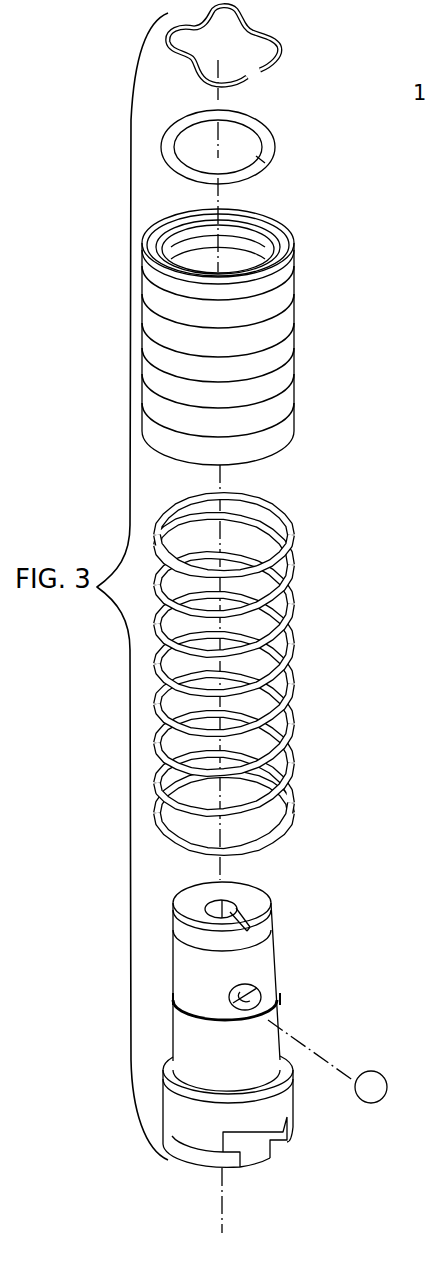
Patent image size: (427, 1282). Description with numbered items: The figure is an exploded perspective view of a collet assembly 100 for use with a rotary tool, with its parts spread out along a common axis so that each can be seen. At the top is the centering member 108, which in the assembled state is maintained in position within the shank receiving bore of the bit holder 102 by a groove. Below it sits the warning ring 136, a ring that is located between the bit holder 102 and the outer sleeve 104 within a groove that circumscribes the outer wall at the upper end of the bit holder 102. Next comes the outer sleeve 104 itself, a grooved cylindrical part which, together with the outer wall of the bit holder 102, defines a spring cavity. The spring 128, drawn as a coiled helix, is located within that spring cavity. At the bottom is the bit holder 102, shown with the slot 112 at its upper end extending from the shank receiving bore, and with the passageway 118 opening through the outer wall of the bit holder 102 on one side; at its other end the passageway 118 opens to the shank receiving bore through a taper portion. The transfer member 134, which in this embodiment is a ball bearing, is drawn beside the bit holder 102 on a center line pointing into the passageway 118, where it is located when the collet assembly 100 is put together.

The collet assembly 100 is at (340, 62).
The bit holder 102 is at (274, 937).
The outer sleeve 104 is at (295, 342).
The centering member 108 is at (243, 78).
The slot 112 is at (240, 913).
The passageway 118 is at (262, 997).
The spring 128 is at (292, 590).
The transfer member 134 is at (378, 1102).
The warning ring 136 is at (258, 160).